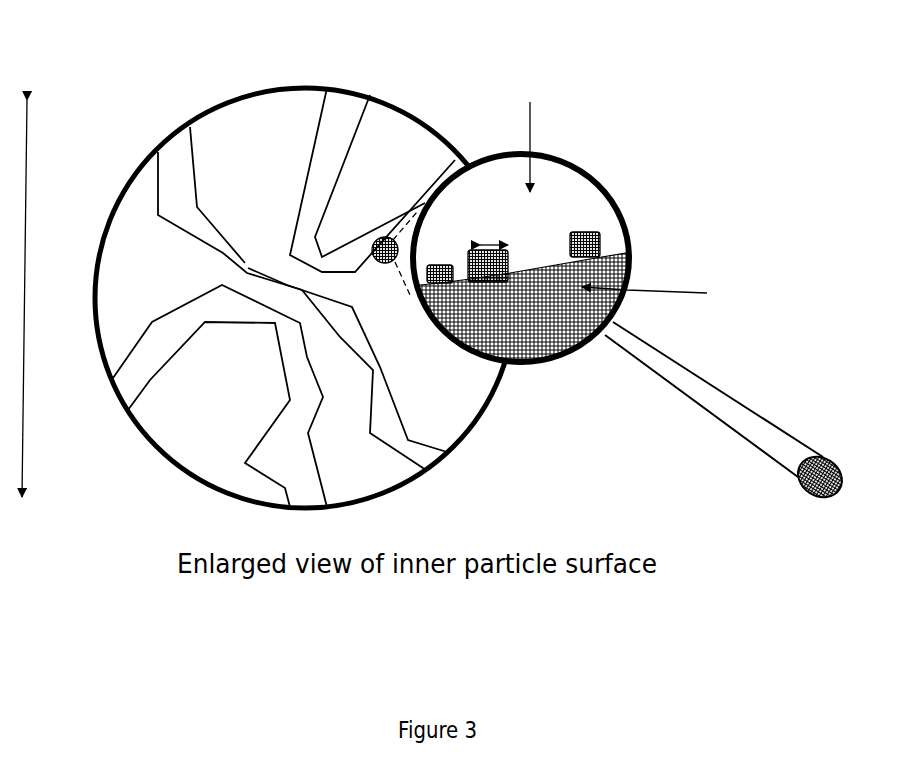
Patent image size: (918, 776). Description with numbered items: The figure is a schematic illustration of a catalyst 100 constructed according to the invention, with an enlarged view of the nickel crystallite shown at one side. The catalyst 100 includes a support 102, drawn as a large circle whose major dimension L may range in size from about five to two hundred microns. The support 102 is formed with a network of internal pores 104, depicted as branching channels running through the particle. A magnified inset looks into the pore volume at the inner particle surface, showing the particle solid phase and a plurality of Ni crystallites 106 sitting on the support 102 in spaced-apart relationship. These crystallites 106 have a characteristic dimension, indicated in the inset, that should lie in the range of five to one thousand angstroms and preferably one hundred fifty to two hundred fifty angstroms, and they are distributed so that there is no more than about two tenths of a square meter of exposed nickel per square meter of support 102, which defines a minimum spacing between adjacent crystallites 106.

The catalyst 100 is at (135, 170).
The support 102 is at (472, 410).
The network of internal pores 104 is at (340, 125).
The Ni crystallites 106 is at (598, 227).